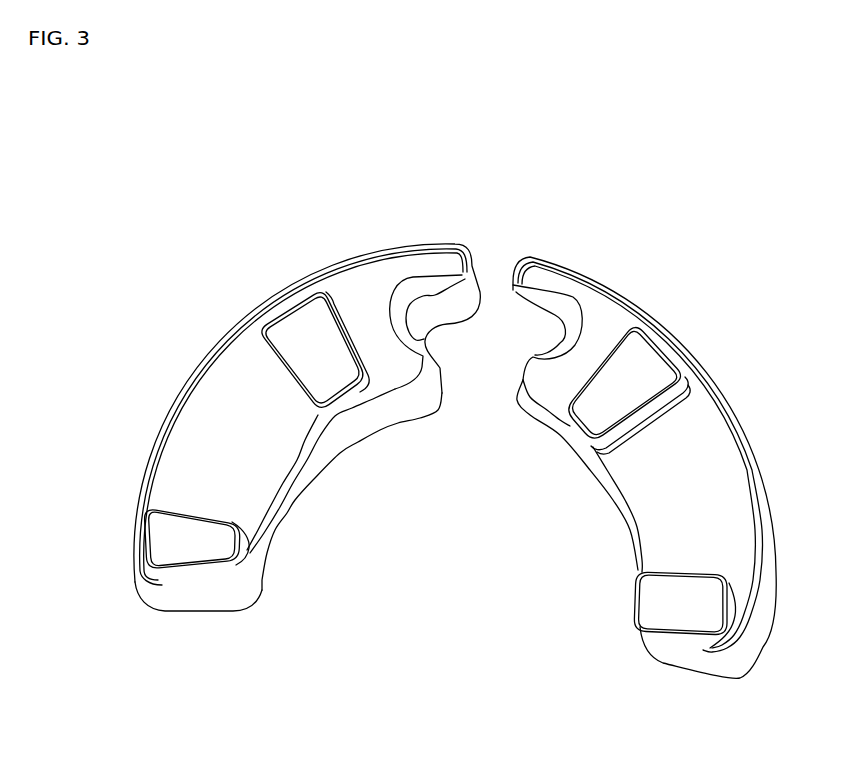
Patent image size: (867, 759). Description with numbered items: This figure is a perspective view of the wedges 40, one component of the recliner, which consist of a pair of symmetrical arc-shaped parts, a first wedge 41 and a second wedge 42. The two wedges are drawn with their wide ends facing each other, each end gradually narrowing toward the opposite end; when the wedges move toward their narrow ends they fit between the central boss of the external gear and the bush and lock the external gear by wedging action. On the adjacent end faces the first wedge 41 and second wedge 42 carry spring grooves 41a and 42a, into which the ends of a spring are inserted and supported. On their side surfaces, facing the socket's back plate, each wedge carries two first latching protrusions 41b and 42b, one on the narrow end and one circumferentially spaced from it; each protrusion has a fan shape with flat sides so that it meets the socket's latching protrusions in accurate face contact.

The wedges 40 is at (634, 276).
The first wedge 41 is at (685, 478).
The spring groove 41a is at (585, 335).
The first latching protrusion 41b is at (633, 380).
The second wedge 42 is at (212, 413).
The spring groove 42a is at (405, 312).
The first latching protrusion 42b is at (298, 326).